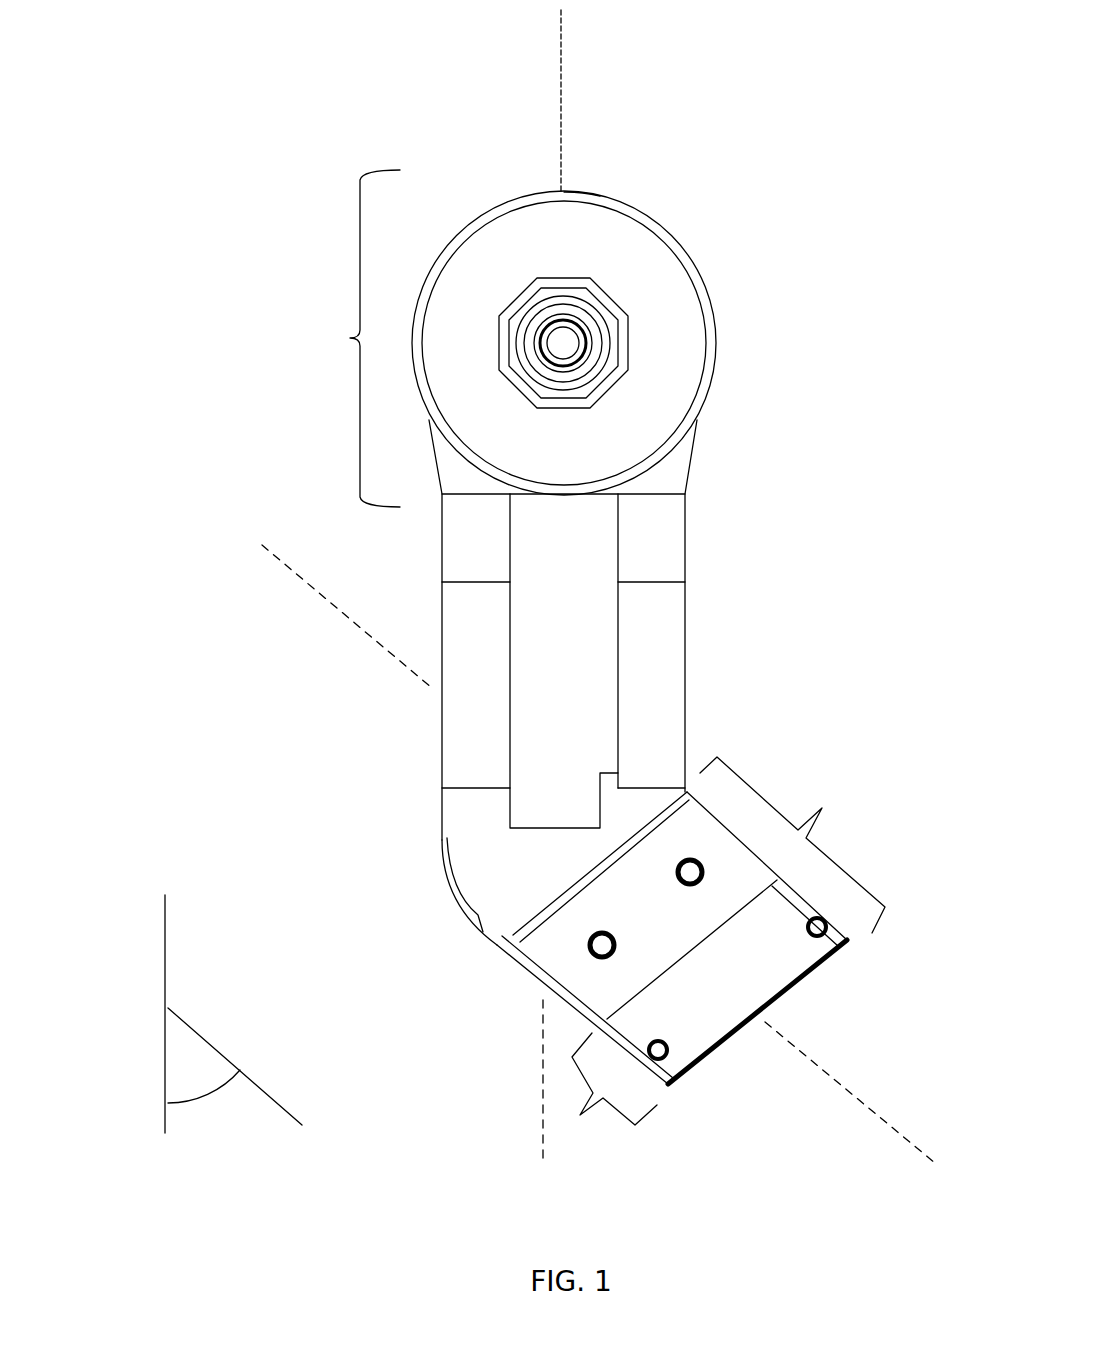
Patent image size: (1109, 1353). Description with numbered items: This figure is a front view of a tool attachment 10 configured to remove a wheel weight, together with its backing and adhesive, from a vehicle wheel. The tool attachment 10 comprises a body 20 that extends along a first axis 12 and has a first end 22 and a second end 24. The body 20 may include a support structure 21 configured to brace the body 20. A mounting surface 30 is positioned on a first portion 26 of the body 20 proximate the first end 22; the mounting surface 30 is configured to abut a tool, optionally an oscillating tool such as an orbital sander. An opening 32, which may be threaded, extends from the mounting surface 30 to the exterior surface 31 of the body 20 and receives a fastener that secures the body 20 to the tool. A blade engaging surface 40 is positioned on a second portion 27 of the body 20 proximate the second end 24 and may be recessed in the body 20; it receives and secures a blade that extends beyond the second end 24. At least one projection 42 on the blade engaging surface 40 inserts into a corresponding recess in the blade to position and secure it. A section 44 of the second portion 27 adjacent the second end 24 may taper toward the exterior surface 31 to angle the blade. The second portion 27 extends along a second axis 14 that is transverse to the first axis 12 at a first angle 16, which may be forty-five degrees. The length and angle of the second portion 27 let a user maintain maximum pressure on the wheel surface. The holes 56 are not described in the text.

The tool attachment 10 is at (322, 277).
The first axis 12 is at (561, 130).
The second axis 14 is at (213, 1047).
The first angle 16 is at (208, 1109).
The body 20 is at (690, 678).
The support structure 21 is at (572, 562).
The first end 22 is at (560, 190).
The second end 24 is at (837, 953).
The first portion 26 is at (350, 338).
The second portion 27 is at (792, 845).
The mounting surface 30 is at (660, 282).
The exterior surface 31 is at (498, 948).
The opening 32 is at (582, 343).
The blade engaging surface 40 is at (723, 993).
The projection 42 is at (808, 918).
The section 44 is at (604, 1094).
The mounting holes 56 is at (700, 863).